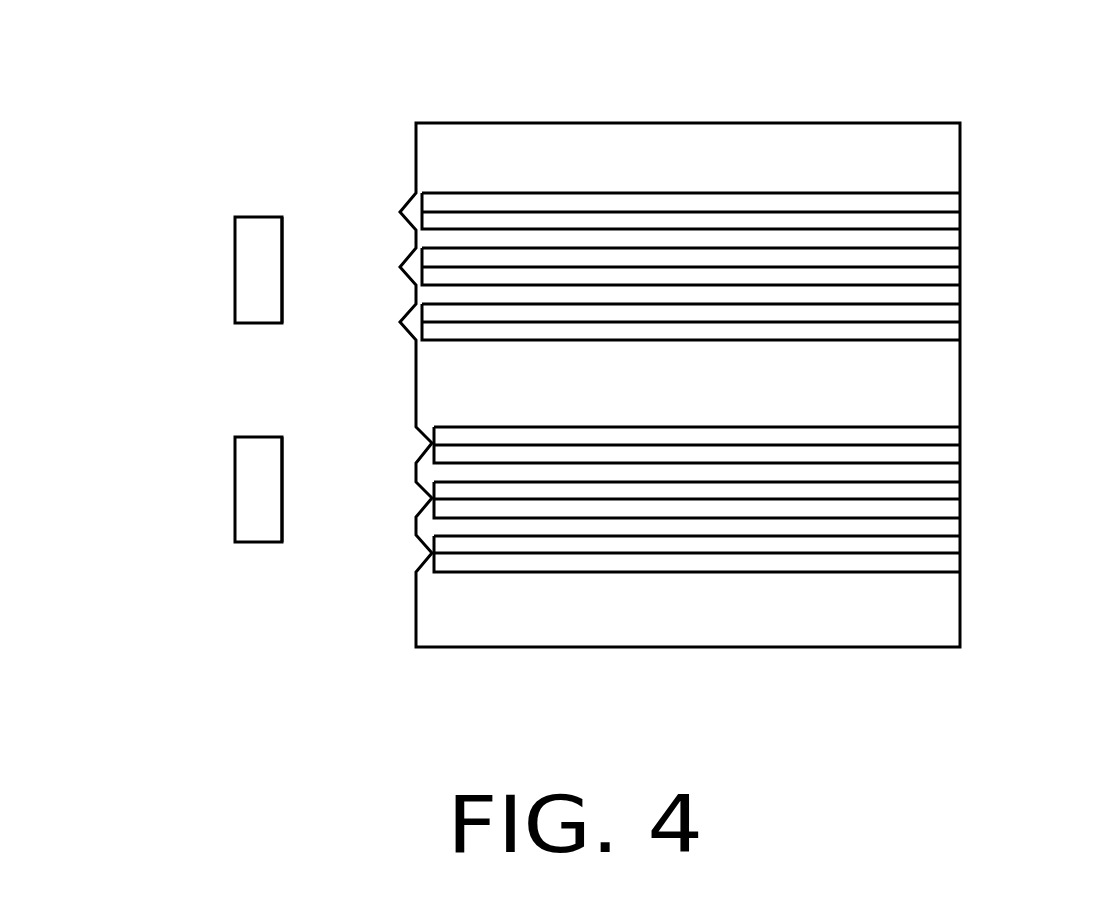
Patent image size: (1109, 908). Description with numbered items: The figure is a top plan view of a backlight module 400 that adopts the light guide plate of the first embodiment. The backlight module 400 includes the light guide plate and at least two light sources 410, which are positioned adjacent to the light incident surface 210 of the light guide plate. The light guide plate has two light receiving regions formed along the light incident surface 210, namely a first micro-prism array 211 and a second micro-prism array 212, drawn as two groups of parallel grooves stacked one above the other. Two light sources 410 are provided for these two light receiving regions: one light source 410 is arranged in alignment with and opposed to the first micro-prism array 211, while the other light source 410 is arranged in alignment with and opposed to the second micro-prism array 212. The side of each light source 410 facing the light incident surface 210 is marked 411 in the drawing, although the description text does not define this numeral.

The backlight module 400 is at (520, 323).
The light incident surface 210 is at (416, 150).
The first micro-prism array 211 is at (405, 210).
The second micro-prism array 212 is at (418, 488).
The light source 410 is at (252, 290).
The light emitting surface 411 is at (282, 290).